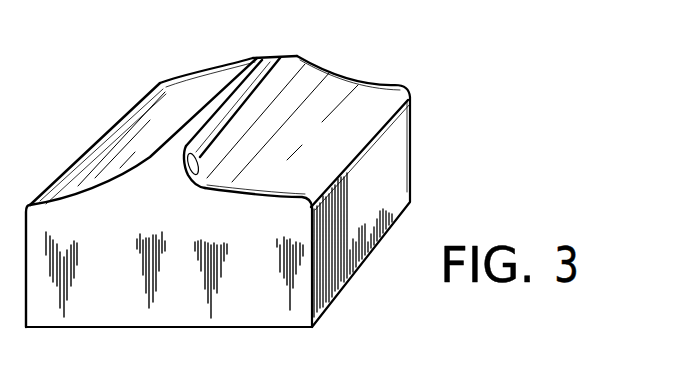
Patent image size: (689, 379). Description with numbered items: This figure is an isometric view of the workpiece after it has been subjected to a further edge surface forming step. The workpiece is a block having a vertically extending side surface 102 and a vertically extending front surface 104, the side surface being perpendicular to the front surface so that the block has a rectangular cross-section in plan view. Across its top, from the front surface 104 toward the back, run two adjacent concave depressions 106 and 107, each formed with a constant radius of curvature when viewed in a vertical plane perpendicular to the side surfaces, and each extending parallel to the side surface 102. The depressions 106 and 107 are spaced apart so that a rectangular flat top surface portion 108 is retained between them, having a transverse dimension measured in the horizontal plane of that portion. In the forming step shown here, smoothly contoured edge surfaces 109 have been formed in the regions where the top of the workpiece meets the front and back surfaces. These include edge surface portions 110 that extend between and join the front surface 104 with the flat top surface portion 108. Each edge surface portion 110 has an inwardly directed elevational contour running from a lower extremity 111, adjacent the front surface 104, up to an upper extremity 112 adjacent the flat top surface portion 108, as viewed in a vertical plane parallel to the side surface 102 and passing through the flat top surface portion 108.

The side surface 102 is at (397, 165).
The front surface 104 is at (258, 311).
The depression 106 is at (358, 90).
The depression 107 is at (155, 118).
The flat top surface portion 108 is at (265, 65).
The edge surface 109 is at (260, 205).
The edge surface portion 110 is at (173, 177).
The lower extremity 111 is at (137, 192).
The upper extremity 112 is at (187, 157).